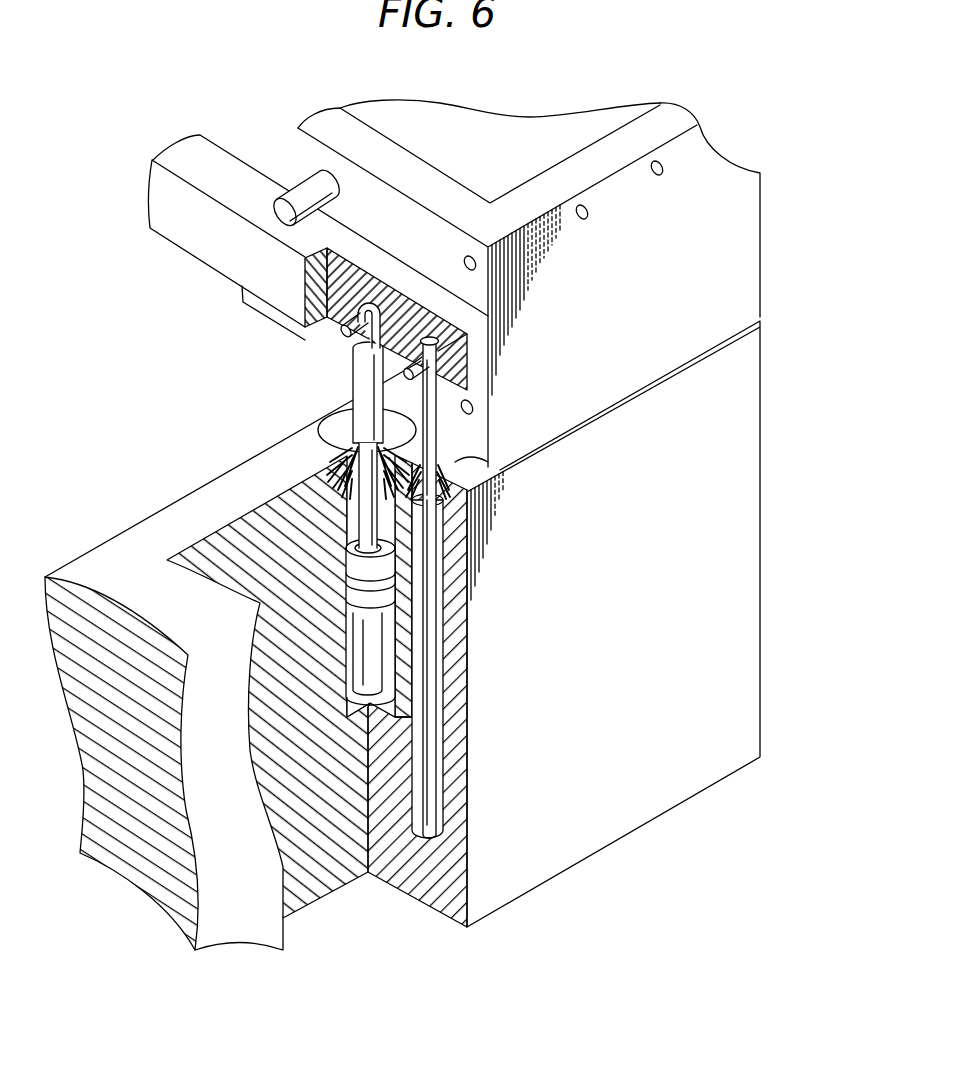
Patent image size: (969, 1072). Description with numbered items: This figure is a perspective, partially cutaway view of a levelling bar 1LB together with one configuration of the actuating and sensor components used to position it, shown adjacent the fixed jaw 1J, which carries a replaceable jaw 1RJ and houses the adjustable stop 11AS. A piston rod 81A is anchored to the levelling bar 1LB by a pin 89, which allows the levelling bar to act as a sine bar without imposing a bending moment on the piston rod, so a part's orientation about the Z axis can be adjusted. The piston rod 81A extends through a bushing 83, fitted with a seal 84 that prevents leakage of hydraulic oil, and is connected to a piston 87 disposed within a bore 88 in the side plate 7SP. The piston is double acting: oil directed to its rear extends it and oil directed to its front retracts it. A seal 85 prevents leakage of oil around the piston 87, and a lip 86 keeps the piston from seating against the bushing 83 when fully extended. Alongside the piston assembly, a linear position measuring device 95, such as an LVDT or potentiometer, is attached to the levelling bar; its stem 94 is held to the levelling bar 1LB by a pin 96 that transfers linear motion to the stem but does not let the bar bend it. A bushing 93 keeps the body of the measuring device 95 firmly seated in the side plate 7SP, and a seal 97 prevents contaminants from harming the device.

The fixed jaw 1J is at (538, 94).
The replaceable jaw 1RJ is at (612, 103).
The levelling bar 1LB is at (152, 185).
The adjustable stop 11AS is at (305, 192).
The side plate 7SP is at (580, 848).
The piston rod 81A is at (352, 358).
The bushing 83 is at (333, 422).
The seal 84 is at (340, 453).
The seal 85 is at (357, 598).
The lip 86 is at (345, 556).
The piston 87 is at (382, 608).
The bore 88 is at (377, 660).
The pin 89 is at (340, 334).
The bushing 93 is at (458, 464).
The stem 94 is at (434, 427).
The measuring device 95 is at (434, 606).
The pin 96 is at (372, 369).
The seal 97 is at (440, 492).